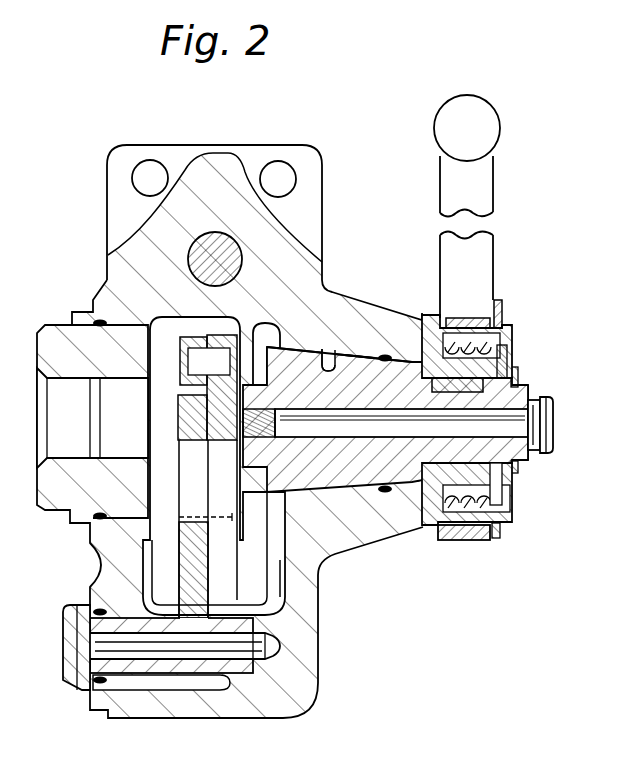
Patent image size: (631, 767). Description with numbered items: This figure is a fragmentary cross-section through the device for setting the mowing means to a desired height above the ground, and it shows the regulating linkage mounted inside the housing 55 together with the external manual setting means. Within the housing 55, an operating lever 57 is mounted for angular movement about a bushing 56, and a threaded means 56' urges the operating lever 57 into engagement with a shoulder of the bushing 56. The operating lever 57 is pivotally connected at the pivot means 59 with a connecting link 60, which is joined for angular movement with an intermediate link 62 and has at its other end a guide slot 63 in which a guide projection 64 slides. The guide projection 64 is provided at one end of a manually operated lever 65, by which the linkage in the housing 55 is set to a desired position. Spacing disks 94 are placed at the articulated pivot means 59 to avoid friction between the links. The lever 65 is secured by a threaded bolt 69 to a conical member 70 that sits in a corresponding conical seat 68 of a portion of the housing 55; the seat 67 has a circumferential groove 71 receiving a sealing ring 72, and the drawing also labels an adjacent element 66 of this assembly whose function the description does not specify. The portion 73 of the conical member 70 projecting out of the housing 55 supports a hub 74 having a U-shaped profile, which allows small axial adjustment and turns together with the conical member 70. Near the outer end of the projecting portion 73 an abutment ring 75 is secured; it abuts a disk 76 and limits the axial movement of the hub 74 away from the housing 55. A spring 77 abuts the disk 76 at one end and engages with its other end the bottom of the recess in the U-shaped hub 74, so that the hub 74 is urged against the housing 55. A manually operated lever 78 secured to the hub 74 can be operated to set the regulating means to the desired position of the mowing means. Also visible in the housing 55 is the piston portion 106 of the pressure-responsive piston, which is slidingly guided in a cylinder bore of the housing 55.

The housing 55 is at (343, 520).
The bushing 56 is at (181, 686).
The threaded means 56' is at (69, 670).
The operating lever 57 is at (190, 543).
The pivot means 59 is at (180, 426).
The connecting link 60 is at (220, 490).
The intermediate link 62 is at (194, 379).
The guide slot 63 is at (215, 521).
The guide projection 64 is at (205, 582).
The manually operated lever 65 is at (255, 568).
The rotor block 66 is at (257, 356).
The seat 67 is at (326, 348).
The conical seat 68 is at (360, 353).
The threaded bolt 69 is at (342, 424).
The conical member 70 is at (367, 387).
The circumferential groove 71 is at (387, 356).
The sealing ring 72 is at (385, 492).
The projecting portion 73 is at (521, 463).
The hub 74 is at (470, 520).
The abutment ring 75 is at (521, 372).
The disk 76 is at (510, 494).
The spring 77 is at (510, 333).
The manually operated lever 78 is at (482, 170).
The spacing disks 94 is at (208, 338).
The piston portion 106 is at (212, 264).